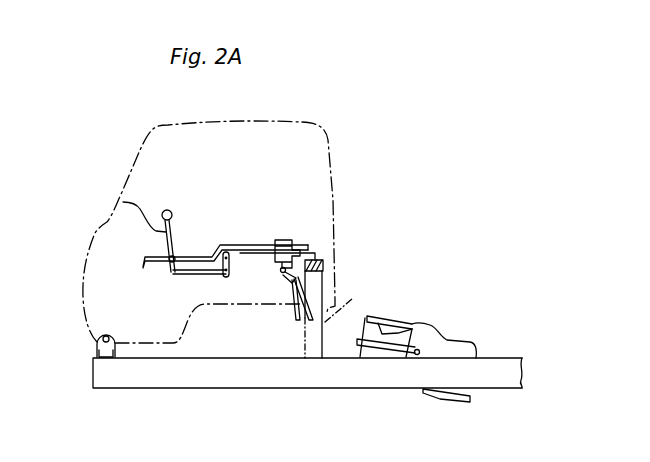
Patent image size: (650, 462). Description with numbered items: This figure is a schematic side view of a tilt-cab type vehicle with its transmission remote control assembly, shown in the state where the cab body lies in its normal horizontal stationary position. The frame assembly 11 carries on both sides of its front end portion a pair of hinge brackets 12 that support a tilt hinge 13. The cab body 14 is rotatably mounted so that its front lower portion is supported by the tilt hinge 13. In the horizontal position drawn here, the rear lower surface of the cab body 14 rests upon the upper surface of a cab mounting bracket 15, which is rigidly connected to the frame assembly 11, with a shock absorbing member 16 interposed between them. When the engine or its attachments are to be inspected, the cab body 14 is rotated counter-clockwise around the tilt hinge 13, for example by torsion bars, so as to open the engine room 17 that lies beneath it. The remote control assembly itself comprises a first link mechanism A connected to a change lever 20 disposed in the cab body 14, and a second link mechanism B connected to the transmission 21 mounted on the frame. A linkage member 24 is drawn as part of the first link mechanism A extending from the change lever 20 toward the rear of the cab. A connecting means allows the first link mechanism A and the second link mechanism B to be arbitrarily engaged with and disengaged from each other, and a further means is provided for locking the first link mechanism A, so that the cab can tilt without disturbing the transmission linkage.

The frame assembly 11 is at (130, 388).
The hinge bracket 12 is at (95, 352).
The tilt hinge 13 is at (97, 341).
The cab body 14 is at (150, 132).
The cab mounting bracket 15 is at (353, 302).
The shock absorbing member 16 is at (323, 266).
The engine room 17 is at (228, 345).
The change lever 20 is at (123, 202).
The transmission 21 is at (441, 333).
The clamp bracket 24 is at (275, 240).
The first link mechanism A is at (183, 274).
The second link mechanism B is at (331, 346).